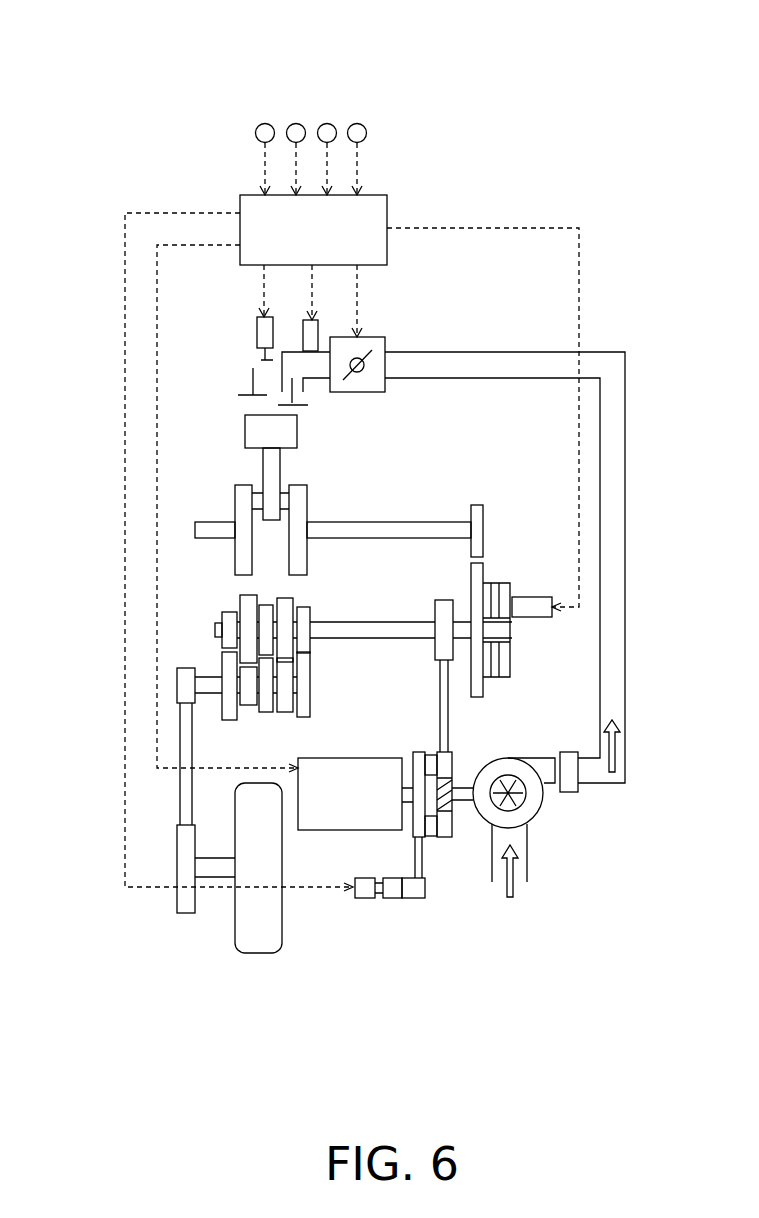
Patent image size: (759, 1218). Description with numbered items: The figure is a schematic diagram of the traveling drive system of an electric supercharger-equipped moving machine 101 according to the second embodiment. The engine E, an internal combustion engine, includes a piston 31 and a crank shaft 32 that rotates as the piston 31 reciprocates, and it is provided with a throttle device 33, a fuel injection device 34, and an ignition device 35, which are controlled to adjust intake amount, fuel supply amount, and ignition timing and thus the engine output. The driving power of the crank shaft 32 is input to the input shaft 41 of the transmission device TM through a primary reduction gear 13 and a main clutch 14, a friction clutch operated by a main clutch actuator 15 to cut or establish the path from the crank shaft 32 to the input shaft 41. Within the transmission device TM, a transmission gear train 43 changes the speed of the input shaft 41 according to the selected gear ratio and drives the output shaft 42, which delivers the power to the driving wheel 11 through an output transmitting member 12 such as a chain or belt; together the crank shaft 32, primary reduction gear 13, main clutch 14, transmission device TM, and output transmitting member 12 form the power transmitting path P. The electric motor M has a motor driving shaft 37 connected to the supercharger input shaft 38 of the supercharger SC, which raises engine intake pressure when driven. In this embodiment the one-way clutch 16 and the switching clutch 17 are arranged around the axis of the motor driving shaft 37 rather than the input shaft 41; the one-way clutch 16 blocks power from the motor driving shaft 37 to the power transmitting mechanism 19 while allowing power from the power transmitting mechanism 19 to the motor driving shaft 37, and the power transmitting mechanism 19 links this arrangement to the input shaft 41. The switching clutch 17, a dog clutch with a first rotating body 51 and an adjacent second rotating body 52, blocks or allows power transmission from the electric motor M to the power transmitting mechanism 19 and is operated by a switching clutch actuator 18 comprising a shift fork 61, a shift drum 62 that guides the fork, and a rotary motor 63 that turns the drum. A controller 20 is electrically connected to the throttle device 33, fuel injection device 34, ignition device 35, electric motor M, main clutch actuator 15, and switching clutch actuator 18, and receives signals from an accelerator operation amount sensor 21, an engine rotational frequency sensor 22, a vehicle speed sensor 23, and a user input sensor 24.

The moving machine 101 is at (142, 122).
The controller 20 is at (388, 207).
The accelerator operation amount sensor 21 is at (265, 123).
The engine rotational frequency sensor 22 is at (296, 123).
The vehicle speed sensor 23 is at (327, 123).
The user input sensor 24 is at (357, 123).
The piston 31 is at (250, 433).
The crank shaft 32 is at (380, 530).
The throttle device 33 is at (385, 342).
The fuel injection device 34 is at (320, 323).
The ignition device 35 is at (258, 333).
The primary reduction gear 13 is at (482, 575).
The main clutch 14 is at (512, 657).
The main clutch actuator 15 is at (538, 601).
The input shaft 41 is at (218, 622).
The output shaft 42 is at (204, 685).
The transmission gear train 43 is at (240, 614).
The power transmitting mechanism 19 is at (450, 720).
The one-way clutch 16 is at (454, 788).
The motor driving shaft 37 is at (415, 757).
The supercharger input shaft 38 is at (466, 802).
The output transmitting member 12 is at (174, 801).
The driving wheel 11 is at (258, 945).
The first rotating body 51 is at (431, 838).
The second rotating body 52 is at (446, 840).
The switching clutch 17 is at (403, 968).
The shift fork 61 is at (417, 876).
The shift drum 62 is at (392, 898).
The rotary motor 63 is at (365, 898).
The switching clutch actuator 18 is at (395, 993).
The engine E is at (197, 505).
The transmission device TM is at (218, 609).
The electric motor M is at (356, 756).
The power transmitting path P is at (227, 734).
The supercharger SC is at (533, 755).